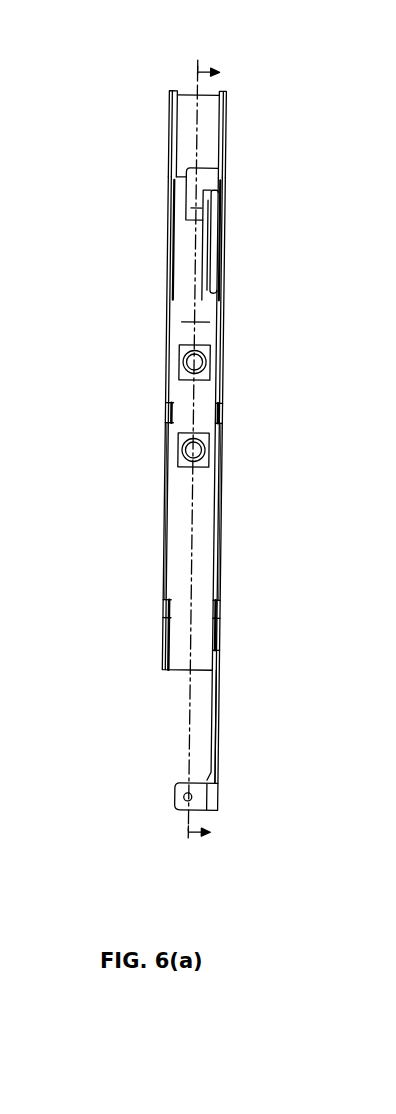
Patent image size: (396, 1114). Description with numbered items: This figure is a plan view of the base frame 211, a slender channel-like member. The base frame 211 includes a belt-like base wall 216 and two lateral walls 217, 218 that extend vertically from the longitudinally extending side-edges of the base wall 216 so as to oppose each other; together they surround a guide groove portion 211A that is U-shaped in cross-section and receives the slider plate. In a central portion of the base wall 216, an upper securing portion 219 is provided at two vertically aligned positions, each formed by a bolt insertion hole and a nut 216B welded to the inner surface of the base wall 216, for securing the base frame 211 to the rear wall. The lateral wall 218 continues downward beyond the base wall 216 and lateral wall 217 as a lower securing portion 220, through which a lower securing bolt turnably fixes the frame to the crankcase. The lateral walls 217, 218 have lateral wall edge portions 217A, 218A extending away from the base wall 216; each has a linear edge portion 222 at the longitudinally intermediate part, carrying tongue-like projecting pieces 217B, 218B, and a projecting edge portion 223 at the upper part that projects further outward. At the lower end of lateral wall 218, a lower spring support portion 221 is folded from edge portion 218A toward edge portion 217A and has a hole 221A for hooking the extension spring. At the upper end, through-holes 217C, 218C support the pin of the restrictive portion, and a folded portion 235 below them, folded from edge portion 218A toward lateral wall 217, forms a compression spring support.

The base frame 211 is at (272, 26).
The guide groove portion 211A is at (205, 238).
The base wall 216 is at (198, 267).
The nut 216B is at (178, 368).
The lateral wall 217 is at (166, 310).
The lateral wall edge portion 217A is at (166, 640).
The tongue-like projecting piece 217B is at (170, 414).
The through-hole 217C is at (170, 100).
The lateral wall 218 is at (222, 310).
The lateral wall edge portion 218A is at (220, 636).
The tongue-like projecting piece 218B is at (220, 414).
The through-hole 218C is at (226, 102).
The upper securing portion 219 is at (214, 352).
The lower securing portion 220 is at (214, 745).
The lower spring support portion 221 is at (186, 806).
The hole 221A is at (185, 795).
The linear edge portion 222 is at (168, 534).
The projecting edge portion 223 is at (170, 272).
The folded portion 235 is at (205, 182).